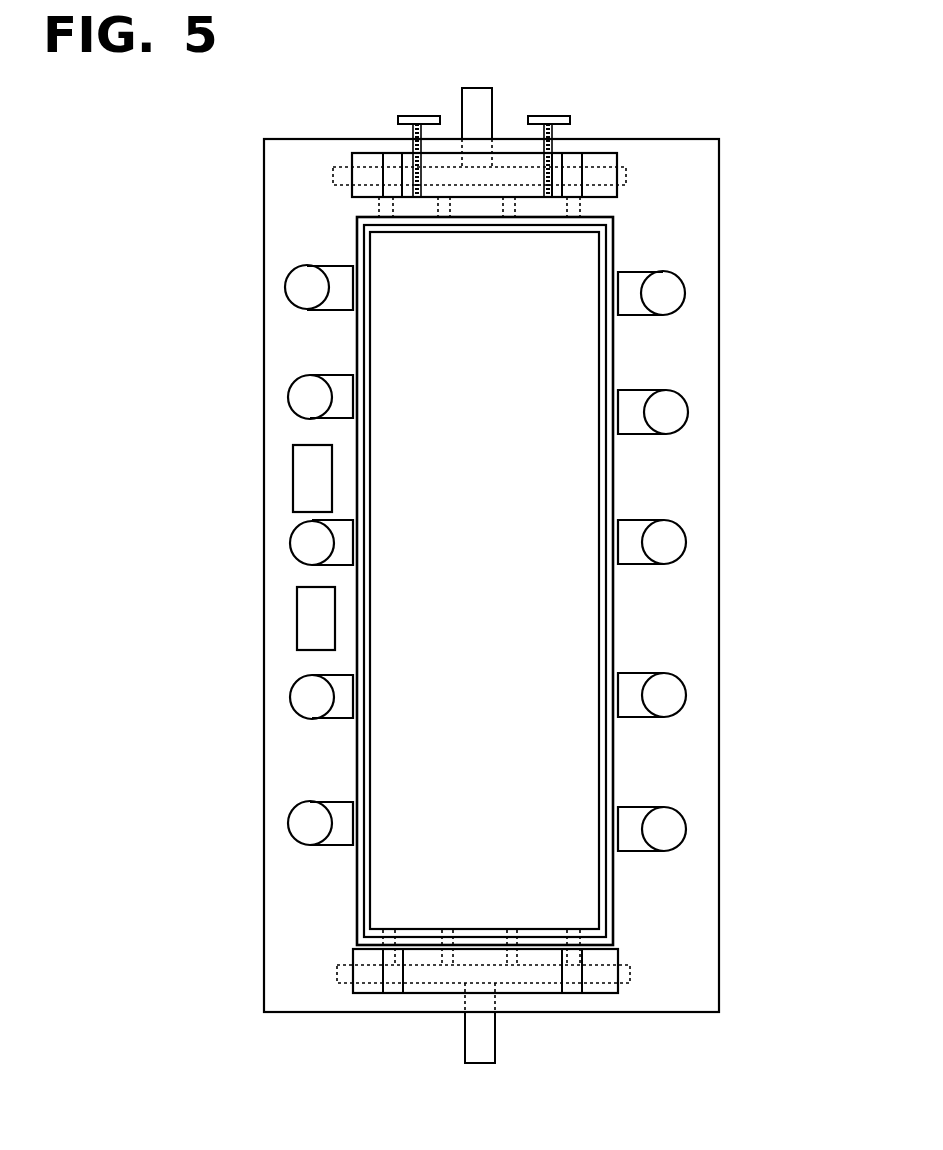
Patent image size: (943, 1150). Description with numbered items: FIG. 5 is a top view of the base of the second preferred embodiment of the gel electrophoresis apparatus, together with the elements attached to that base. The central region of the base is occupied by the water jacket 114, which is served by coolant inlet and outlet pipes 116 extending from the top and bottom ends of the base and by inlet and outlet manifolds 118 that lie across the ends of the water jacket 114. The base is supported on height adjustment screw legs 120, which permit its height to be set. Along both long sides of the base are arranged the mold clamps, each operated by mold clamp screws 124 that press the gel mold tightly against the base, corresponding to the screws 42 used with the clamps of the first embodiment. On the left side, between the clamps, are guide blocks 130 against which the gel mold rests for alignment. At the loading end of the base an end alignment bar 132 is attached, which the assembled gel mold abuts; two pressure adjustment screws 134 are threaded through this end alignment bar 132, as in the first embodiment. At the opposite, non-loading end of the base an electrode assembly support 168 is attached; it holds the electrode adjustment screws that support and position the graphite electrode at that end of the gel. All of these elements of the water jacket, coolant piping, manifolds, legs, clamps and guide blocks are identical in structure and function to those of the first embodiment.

The screws 42 is at (308, 537).
The water jacket 114 is at (487, 383).
The coolant inlet and outlet pipes 116 is at (475, 111).
The inlet and outlet manifolds 118 is at (630, 975).
The height adjustment screw legs 120 is at (360, 348).
The mold clamp screws 124 is at (305, 823).
The guide blocks 130 is at (307, 465).
The end alignment bar 132 is at (598, 191).
The pressure adjustment screws 134 is at (405, 120).
The electrode assembly support 168 is at (618, 952).